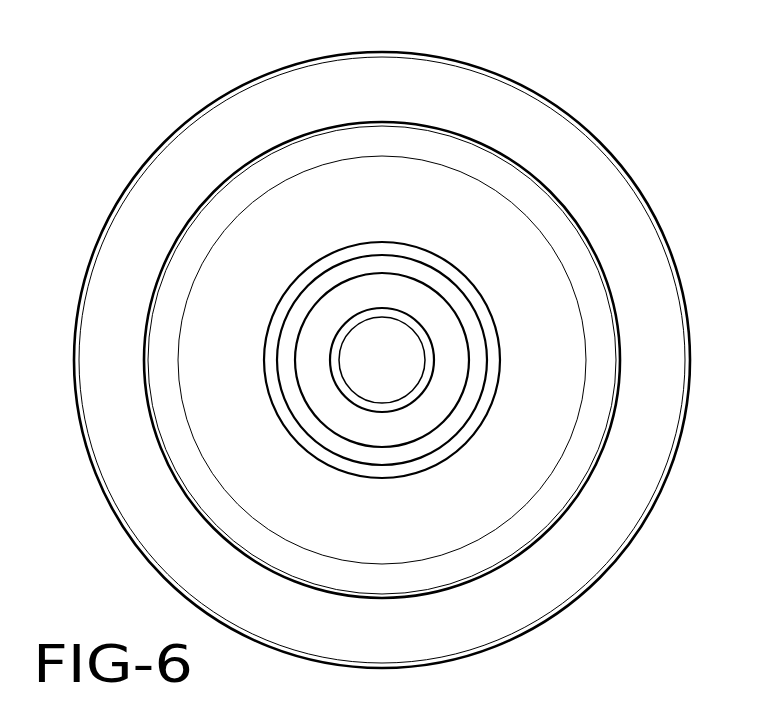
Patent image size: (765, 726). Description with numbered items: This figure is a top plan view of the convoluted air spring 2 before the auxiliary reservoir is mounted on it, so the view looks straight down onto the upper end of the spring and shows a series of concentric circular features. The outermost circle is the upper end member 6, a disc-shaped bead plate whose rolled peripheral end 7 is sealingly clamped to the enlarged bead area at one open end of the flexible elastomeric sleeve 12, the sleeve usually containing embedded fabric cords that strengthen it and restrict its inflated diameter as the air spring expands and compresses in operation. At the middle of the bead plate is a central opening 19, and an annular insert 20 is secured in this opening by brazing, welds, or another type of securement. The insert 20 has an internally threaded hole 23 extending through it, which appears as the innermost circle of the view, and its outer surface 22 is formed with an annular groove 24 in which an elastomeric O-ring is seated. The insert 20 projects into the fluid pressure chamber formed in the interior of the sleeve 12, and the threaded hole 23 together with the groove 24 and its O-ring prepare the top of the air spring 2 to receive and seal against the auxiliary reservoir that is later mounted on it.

The convoluted air spring 2 is at (627, 171).
The end member 6 is at (611, 284).
The rolled peripheral ends 7 is at (608, 334).
The flexible elastomeric sleeve 12 is at (638, 226).
The central opening 19 is at (462, 442).
The annular insert 20 is at (430, 302).
The outer surface 22 is at (447, 327).
The internally threaded hole 23 is at (364, 320).
The annular groove 24 is at (480, 357).